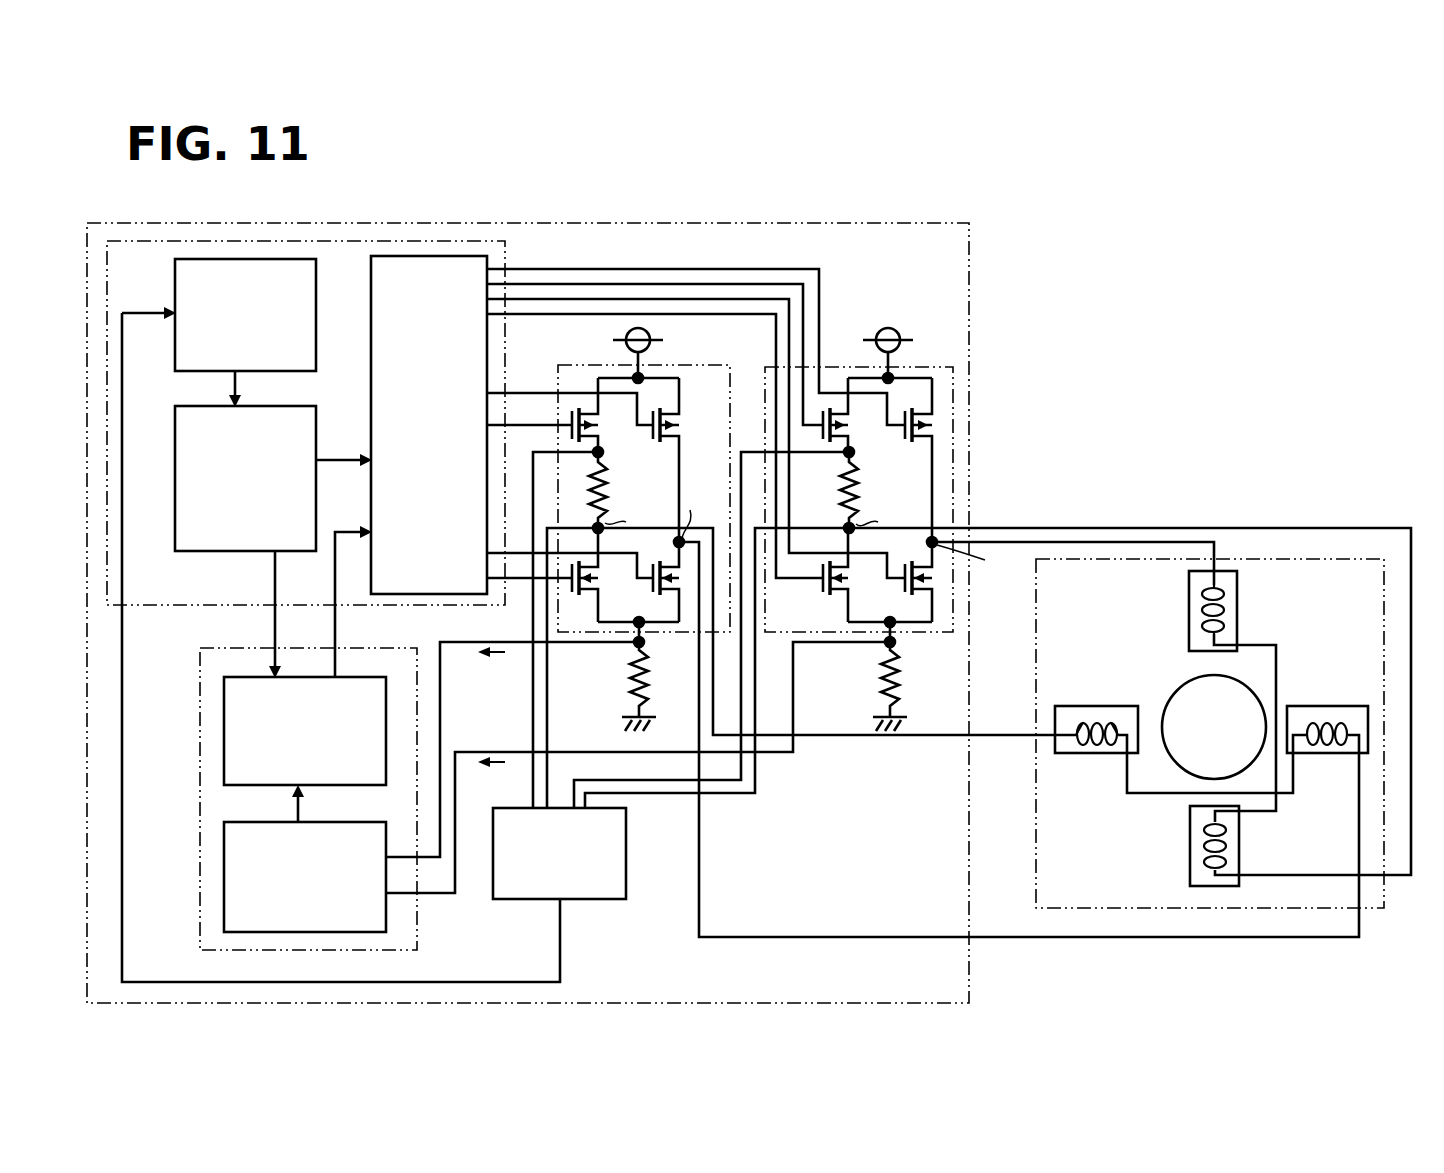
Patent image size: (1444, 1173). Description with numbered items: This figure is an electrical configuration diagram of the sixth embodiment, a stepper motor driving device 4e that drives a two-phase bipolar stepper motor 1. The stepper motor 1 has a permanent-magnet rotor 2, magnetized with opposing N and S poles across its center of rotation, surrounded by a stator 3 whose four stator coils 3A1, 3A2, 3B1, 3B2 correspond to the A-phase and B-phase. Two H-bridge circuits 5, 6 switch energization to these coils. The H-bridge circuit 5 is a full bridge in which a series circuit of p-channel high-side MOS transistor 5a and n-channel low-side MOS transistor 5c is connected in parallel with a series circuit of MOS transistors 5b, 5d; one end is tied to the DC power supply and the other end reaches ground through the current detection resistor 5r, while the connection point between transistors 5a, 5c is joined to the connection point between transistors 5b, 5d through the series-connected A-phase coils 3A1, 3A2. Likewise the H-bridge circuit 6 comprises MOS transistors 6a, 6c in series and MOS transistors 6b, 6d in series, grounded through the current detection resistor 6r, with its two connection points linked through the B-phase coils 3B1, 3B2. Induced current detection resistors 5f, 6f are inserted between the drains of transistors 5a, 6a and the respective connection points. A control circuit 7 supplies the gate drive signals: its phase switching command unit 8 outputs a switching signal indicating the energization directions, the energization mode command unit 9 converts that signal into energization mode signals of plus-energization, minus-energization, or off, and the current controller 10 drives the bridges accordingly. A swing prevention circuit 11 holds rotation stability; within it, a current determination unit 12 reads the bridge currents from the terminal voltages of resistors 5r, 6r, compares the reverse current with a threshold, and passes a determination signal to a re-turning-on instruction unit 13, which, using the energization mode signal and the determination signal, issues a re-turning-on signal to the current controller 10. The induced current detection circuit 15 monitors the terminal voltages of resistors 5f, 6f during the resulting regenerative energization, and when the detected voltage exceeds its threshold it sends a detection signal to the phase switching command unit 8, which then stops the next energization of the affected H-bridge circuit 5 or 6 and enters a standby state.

The stepper motor 1 is at (1276, 558).
The rotor 2 is at (1180, 690).
The stator 3 is at (1246, 600).
The stator coil 3A1 is at (1078, 706).
The stator coil 3A2 is at (1325, 706).
The stator coil 3B1 is at (1189, 598).
The stator coil 3B2 is at (1190, 848).
The stepper motor driving device 4e is at (838, 223).
The H-bridge circuit 5 is at (600, 632).
The MOS transistor 5a is at (590, 410).
The MOS transistor 5b is at (677, 430).
The MOS transistor 5c is at (584, 597).
The MOS transistor 5d is at (666, 597).
The induced current detection resistor 5f is at (603, 492).
The current detection resistor 5r is at (632, 700).
The H-bridge circuit 6 is at (930, 632).
The MOS transistor 6a is at (836, 410).
The MOS transistor 6b is at (937, 428).
The MOS transistor 6c is at (832, 597).
The MOS transistor 6d is at (938, 583).
The induced current detection resistor 6f is at (855, 492).
The current detection resistor 6r is at (882, 680).
The control circuit 7 is at (460, 241).
The phase switching command unit 8 is at (248, 259).
The energization mode command unit 9 is at (205, 551).
The current controller 10 is at (488, 262).
The swing prevention circuit 11 is at (420, 942).
The current determination unit 12 is at (224, 880).
The re-turning-on instruction unit 13 is at (224, 735).
The induced current detection circuit 15 is at (607, 899).